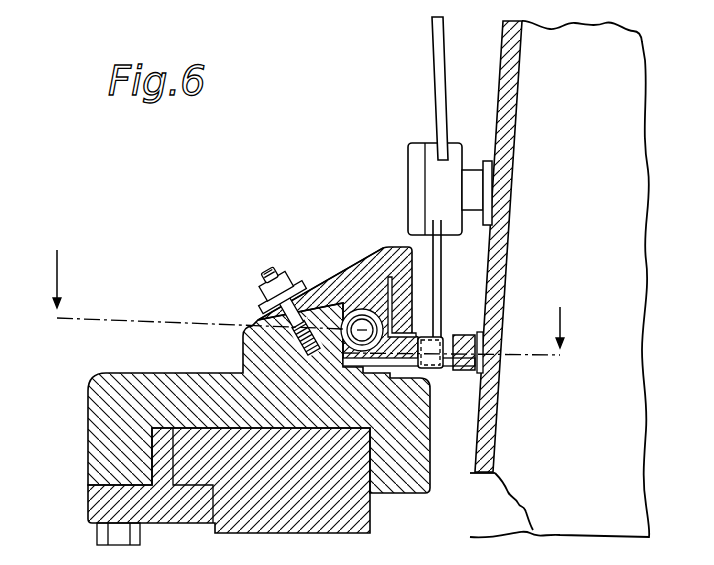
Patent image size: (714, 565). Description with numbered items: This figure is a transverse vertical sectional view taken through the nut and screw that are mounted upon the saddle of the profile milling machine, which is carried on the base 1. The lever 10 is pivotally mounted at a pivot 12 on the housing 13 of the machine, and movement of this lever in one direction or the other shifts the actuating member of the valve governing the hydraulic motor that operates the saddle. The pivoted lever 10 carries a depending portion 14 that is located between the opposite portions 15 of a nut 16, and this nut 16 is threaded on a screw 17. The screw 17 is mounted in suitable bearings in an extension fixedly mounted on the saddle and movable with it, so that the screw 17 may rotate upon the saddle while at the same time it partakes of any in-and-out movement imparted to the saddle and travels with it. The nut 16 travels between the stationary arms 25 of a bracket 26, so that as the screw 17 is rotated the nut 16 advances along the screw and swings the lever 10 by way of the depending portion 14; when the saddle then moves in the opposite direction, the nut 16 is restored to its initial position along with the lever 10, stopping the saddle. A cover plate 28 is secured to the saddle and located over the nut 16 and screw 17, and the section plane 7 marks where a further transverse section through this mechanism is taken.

The base 1 is at (300, 527).
The section line 7- 7 is at (307, 308).
The lever 10 is at (437, 43).
The pivot 12 is at (475, 168).
The housing 13 is at (507, 253).
The depending portion 14 is at (474, 294).
The opposite portions 15 is at (408, 363).
The nut 16 is at (380, 297).
The screw 17 is at (318, 287).
The stationary arms 25 is at (410, 333).
The bracket 26 is at (473, 333).
The cover plate 28 is at (340, 280).